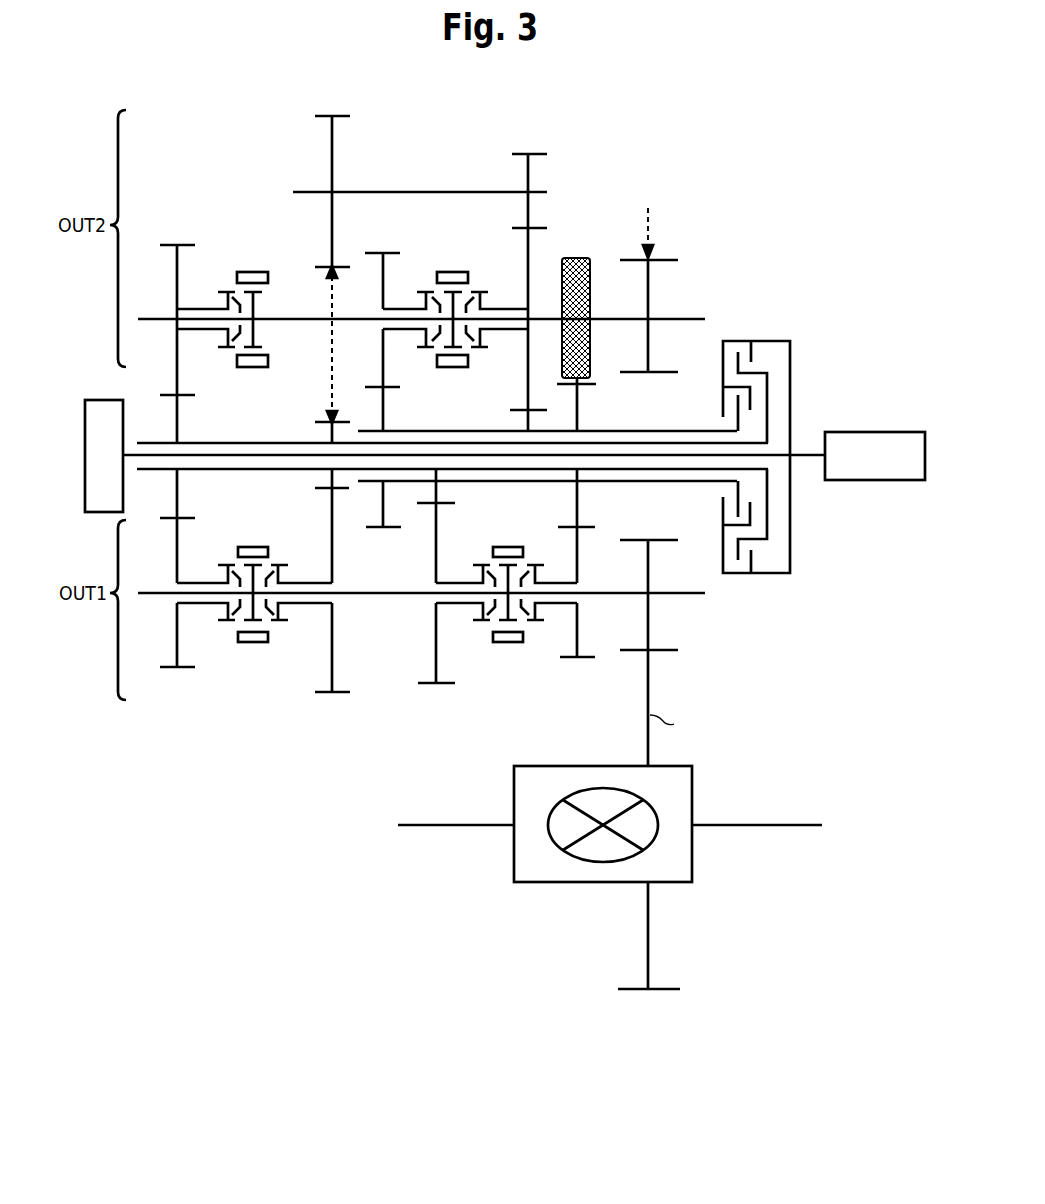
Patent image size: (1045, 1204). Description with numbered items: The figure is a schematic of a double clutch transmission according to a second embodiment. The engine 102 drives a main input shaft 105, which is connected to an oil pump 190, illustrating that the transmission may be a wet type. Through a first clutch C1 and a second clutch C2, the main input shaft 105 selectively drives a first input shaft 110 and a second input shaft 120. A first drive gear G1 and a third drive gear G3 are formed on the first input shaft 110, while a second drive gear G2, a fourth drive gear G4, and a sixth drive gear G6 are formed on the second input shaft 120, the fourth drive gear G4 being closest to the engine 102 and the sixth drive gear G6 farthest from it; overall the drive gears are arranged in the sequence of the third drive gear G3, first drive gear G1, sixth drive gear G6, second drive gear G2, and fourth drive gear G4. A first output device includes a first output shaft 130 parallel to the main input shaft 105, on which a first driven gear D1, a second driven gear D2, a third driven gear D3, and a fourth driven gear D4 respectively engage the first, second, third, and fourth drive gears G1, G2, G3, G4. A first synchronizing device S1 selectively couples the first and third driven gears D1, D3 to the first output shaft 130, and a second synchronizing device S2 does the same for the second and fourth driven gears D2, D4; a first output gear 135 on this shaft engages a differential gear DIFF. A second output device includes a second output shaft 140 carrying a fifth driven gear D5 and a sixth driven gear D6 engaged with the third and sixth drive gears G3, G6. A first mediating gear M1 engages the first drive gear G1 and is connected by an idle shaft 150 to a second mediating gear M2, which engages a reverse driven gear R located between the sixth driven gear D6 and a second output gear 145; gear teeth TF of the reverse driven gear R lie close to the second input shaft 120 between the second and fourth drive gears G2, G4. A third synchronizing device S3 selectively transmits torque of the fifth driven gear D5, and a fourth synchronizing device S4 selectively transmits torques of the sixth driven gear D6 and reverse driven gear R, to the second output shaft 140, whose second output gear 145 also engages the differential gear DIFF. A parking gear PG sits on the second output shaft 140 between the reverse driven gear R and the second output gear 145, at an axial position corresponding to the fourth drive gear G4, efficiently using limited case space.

The engine 102 is at (885, 432).
The main input shaft 105 is at (666, 456).
The first input shaft 110 is at (242, 443).
The second input shaft 120 is at (620, 431).
The first output shaft 130 is at (377, 596).
The first output gear 135 is at (650, 617).
The second output shaft 140 is at (288, 318).
The second output gear 145 is at (650, 287).
The idle shaft 150 is at (438, 192).
The oil pump 190 is at (103, 399).
The first clutch C1 is at (760, 392).
The second clutch C2 is at (760, 355).
The first mediating gear M1 is at (332, 134).
The second mediating gear M2 is at (528, 166).
The reverse driven gear R is at (530, 267).
The gear teeth of the reverse driven gear TF is at (516, 421).
The parking gear PG is at (591, 264).
The first synchronizing device S1 is at (254, 608).
The second synchronizing device S2 is at (506, 608).
The third synchronizing device S3 is at (252, 305).
The fourth synchronizing device S4 is at (452, 305).
The first drive gear G1 is at (322, 484).
The second drive gear G2 is at (440, 492).
The third drive gear G3 is at (179, 487).
The fourth drive gear G4 is at (580, 497).
The sixth drive gear G6 is at (388, 399).
The first driven gear D1 is at (332, 661).
The second driven gear D2 is at (436, 657).
The third driven gear D3 is at (177, 650).
The fourth driven gear D4 is at (577, 645).
The fifth driven gear D5 is at (200, 330).
The sixth driven gear D6 is at (402, 328).
The differential gear DIFF is at (610, 824).